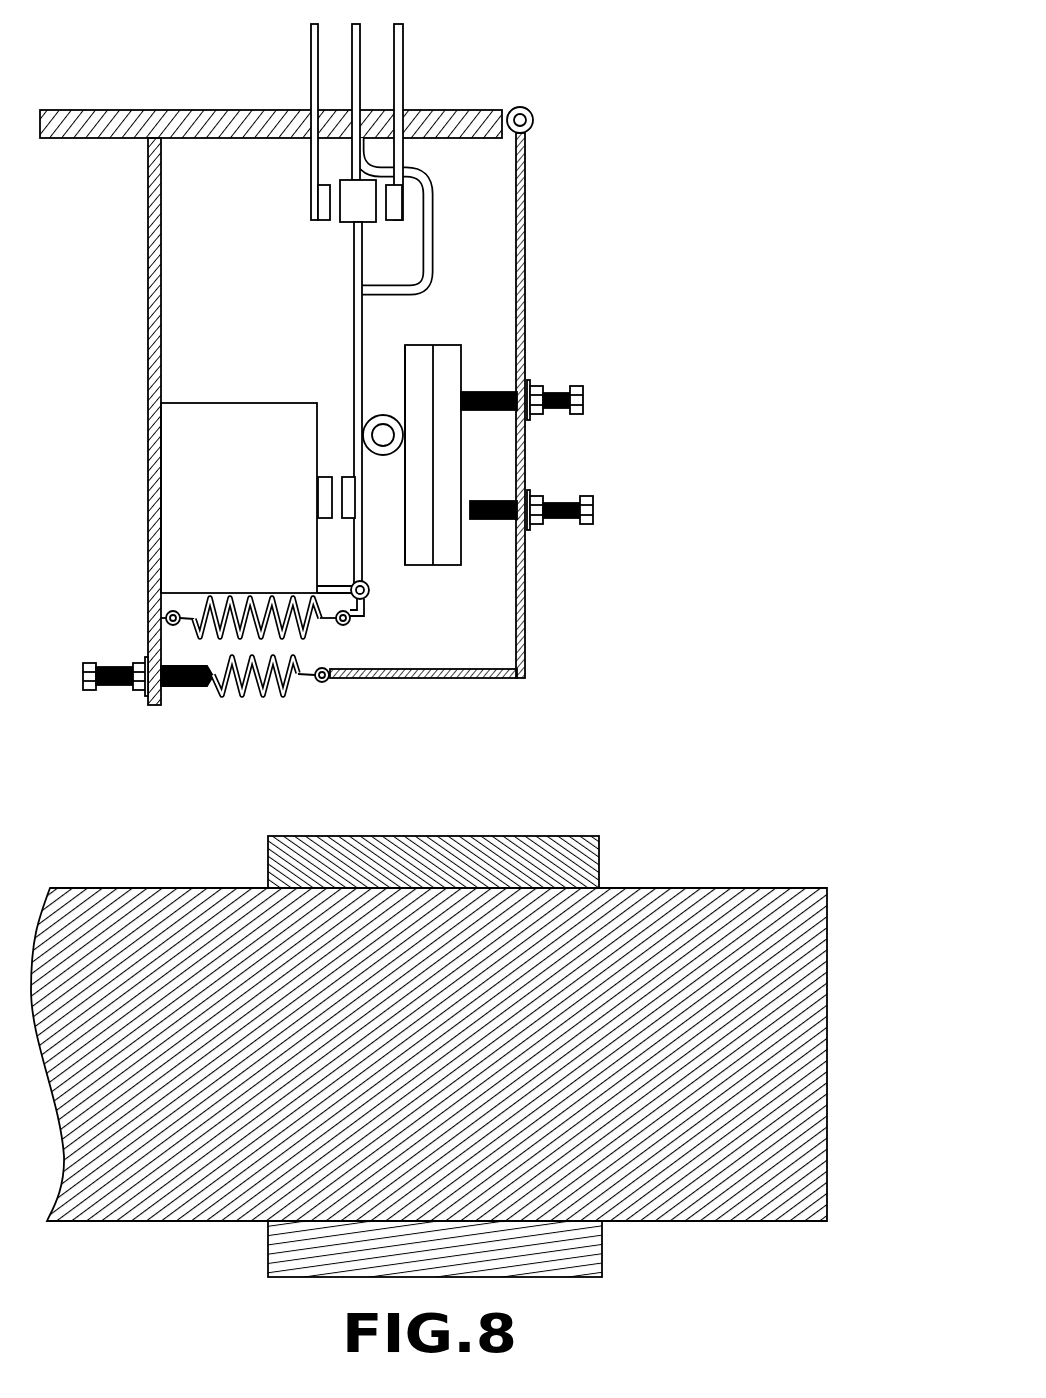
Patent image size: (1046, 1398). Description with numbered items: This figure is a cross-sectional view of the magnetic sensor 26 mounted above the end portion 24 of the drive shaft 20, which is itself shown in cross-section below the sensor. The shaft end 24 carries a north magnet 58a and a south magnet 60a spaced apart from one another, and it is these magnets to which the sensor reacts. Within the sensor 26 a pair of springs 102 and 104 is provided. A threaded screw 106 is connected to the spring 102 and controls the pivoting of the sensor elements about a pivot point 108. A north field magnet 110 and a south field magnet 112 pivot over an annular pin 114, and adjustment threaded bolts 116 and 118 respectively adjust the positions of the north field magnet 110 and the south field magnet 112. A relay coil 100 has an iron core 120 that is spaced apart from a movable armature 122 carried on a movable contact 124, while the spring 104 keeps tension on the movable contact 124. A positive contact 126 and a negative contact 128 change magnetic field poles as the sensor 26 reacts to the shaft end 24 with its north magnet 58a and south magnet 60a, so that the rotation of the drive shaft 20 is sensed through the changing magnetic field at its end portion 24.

The drive shaft 20 is at (829, 1049).
The end portion of shaft 24 is at (774, 886).
The magnetic sensor 26 is at (608, 251).
The north magnet 58a is at (565, 836).
The south magnet 60a is at (575, 1277).
The relay coil 100 is at (192, 528).
The spring 102 is at (247, 695).
The spring 104 is at (200, 613).
The threaded screw 106 is at (112, 690).
The pivot point 108 is at (531, 108).
The north field magnet 110 is at (447, 565).
The south field magnet 112 is at (418, 565).
The annular pin 114 is at (383, 415).
The adjustment threaded bolt 116 is at (566, 496).
The adjustment threaded bolt 118 is at (556, 385).
The iron core 120 is at (325, 477).
The movable armature 122 is at (347, 477).
The movable contact 124 is at (352, 158).
The positive contact 126 is at (330, 222).
The negative contact 128 is at (405, 255).